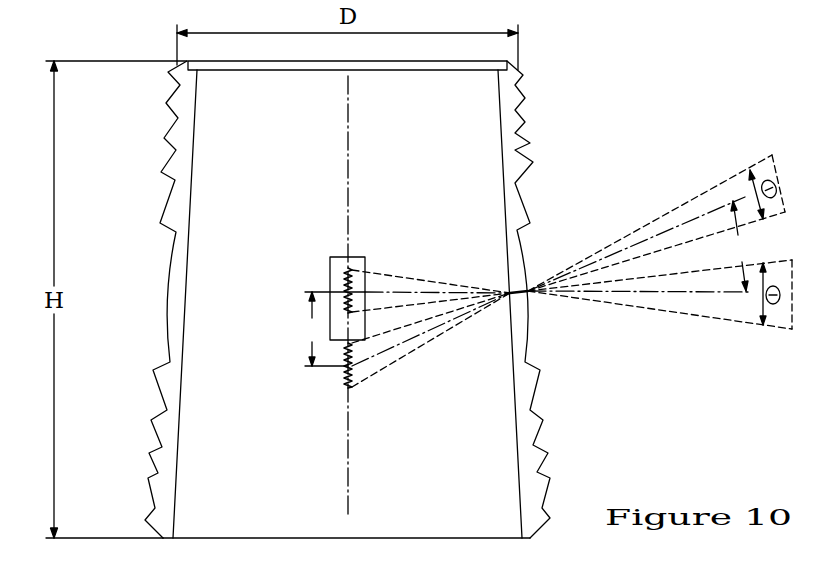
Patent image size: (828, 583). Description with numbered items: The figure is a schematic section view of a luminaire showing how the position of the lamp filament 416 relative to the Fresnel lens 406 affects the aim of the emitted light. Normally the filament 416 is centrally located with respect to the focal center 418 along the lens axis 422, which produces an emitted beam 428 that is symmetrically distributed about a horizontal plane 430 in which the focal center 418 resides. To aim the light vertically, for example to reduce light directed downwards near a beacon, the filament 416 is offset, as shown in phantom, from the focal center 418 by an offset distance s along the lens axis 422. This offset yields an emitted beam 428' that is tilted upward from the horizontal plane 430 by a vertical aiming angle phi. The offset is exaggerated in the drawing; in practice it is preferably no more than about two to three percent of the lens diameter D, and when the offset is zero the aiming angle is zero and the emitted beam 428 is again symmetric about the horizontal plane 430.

The Fresnel lens 406 is at (520, 170).
The filament 416 is at (348, 343).
The focal center 418 is at (350, 290).
The lens axis 422 is at (348, 175).
The emitted beam 428 is at (660, 318).
The emitted beam 428' is at (656, 223).
The horizontal plane 430 is at (687, 293).